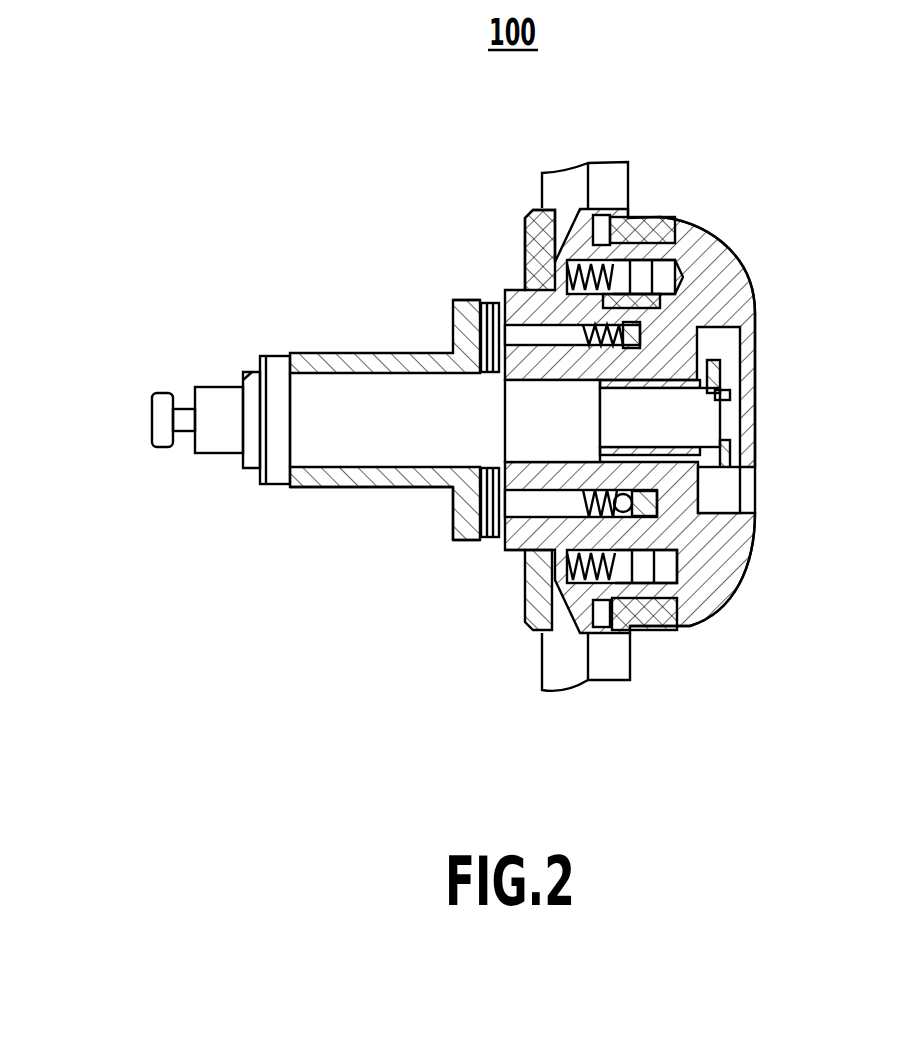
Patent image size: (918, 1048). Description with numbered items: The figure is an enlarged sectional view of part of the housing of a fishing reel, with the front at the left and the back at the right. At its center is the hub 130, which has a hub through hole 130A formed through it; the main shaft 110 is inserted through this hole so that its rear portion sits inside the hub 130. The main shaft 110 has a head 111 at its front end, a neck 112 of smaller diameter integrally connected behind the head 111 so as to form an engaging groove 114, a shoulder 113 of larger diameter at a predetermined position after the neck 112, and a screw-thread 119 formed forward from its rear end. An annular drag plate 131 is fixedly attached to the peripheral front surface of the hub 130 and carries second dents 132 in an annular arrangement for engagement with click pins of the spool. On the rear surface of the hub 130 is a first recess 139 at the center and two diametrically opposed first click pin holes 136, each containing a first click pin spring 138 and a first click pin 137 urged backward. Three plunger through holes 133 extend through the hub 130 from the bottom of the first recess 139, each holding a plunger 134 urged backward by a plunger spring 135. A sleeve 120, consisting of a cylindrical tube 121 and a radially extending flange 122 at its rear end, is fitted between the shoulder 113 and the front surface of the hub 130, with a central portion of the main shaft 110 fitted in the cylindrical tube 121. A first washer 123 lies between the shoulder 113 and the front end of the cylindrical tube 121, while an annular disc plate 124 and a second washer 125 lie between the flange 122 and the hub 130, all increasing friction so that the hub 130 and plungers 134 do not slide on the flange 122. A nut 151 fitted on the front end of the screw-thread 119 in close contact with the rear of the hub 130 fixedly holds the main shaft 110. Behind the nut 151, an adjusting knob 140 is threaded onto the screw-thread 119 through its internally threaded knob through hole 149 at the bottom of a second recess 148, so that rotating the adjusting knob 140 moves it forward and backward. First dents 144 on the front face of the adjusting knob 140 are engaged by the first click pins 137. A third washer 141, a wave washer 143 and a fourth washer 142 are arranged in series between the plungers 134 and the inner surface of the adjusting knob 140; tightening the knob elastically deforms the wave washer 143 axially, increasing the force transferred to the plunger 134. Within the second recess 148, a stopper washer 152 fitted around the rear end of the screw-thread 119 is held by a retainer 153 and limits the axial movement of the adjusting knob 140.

The main shaft 110 is at (213, 372).
The head 111 is at (160, 420).
The neck 112 is at (184, 432).
The shoulder 113 is at (280, 486).
The engaging groove 114 is at (197, 400).
The screw-thread 119 is at (703, 395).
The sleeve 120 is at (334, 490).
The cylindrical tube 121 is at (328, 353).
The flange 122 is at (463, 507).
The first washer 123 is at (292, 365).
The annular disc plate 124 is at (465, 300).
The second washer 125 is at (490, 303).
The hub 130 is at (515, 300).
The hub through hole 130A is at (510, 401).
The annular drag plate 131 is at (548, 200).
The second dents 132 is at (550, 225).
The plunger through holes 133 is at (535, 545).
The plunger 134 is at (550, 503).
The plunger spring 135 is at (526, 565).
The first click pin holes 136 is at (575, 625).
The first click pin 137 is at (642, 583).
The first click pin spring 138 is at (630, 583).
The first recess 139 is at (622, 330).
The adjusting knob 140 is at (718, 595).
The third washer 141 is at (655, 515).
The fourth washer 142 is at (640, 507).
The wave washer 143 is at (645, 498).
The first dents 144 is at (692, 618).
The second recess 148 is at (722, 494).
The knob through hole 149 is at (712, 477).
The nut 151 is at (640, 320).
The stopper washer 152 is at (724, 368).
The retainer 153 is at (731, 397).